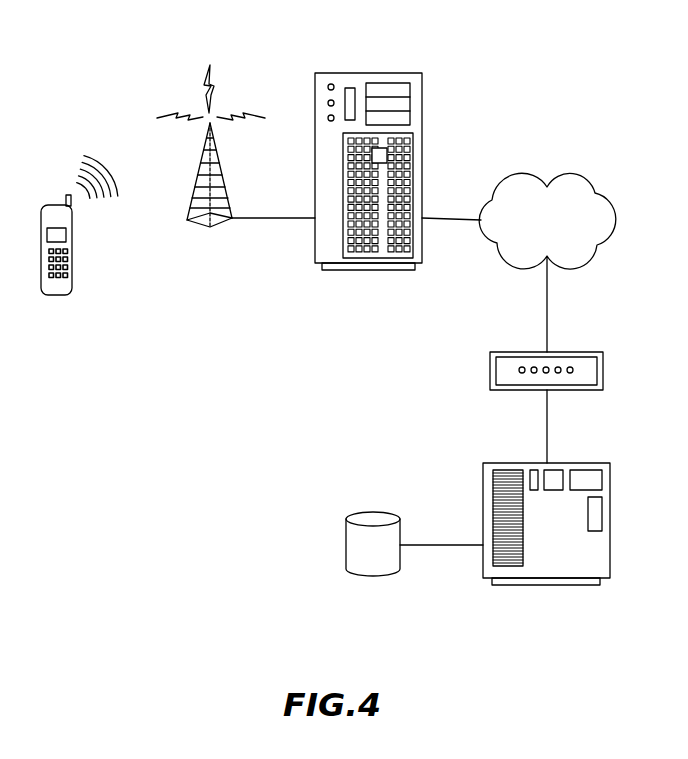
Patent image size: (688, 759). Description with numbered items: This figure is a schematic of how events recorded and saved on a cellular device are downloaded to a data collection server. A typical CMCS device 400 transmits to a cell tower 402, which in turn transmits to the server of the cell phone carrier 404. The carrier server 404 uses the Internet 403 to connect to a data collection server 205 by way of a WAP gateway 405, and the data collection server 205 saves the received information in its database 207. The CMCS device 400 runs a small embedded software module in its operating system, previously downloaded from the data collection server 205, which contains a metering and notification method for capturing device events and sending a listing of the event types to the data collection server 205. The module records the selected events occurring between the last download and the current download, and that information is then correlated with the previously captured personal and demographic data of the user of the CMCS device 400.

The CMCS device 400 is at (73, 259).
The cell tower 402 is at (196, 182).
The server of the cell phone carrier 404 is at (357, 72).
The Internet 403 is at (503, 183).
The WAP gateway 405 is at (490, 372).
The data collection server 205 is at (483, 482).
The database 207 is at (346, 548).